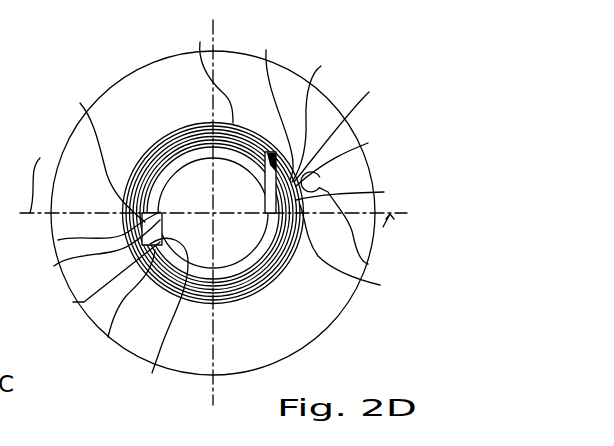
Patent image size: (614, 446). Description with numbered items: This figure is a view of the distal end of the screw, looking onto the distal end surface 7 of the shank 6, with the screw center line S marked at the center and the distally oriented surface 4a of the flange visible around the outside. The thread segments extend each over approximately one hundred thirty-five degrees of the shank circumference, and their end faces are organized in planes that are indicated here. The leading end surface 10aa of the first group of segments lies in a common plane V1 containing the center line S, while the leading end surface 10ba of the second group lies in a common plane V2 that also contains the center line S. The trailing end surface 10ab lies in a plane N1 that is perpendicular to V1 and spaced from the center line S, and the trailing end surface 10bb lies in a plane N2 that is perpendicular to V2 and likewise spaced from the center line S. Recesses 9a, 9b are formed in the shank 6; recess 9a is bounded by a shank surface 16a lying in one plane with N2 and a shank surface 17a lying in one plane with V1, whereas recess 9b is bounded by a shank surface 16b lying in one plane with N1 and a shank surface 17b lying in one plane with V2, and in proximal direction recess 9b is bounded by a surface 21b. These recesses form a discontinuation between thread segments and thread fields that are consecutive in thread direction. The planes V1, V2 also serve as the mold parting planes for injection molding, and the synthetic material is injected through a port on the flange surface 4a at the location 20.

The distally oriented surface of the flange 4a is at (312, 339).
The screw center line S is at (211, 211).
The shank 6 is at (177, 160).
The distal end surface 7 is at (247, 258).
The trailing end surface 10ab is at (262, 98).
The shank surface 16b is at (321, 110).
The surface 21b is at (350, 124).
The recess 9b is at (349, 151).
The leading end surface 10ba is at (369, 186).
The injection port location 20 is at (368, 264).
The shank surface 17b is at (362, 258).
The common plane V2 is at (401, 232).
The common plane N1 is at (207, 65).
The leading end surface 10aa is at (94, 150).
The common plane V1 is at (38, 172).
The shank surface 17a is at (86, 234).
The shank surface 16a is at (86, 255).
The recess 9a is at (96, 282).
The trailing end surface 10bb is at (108, 307).
The common plane N2 is at (157, 319).